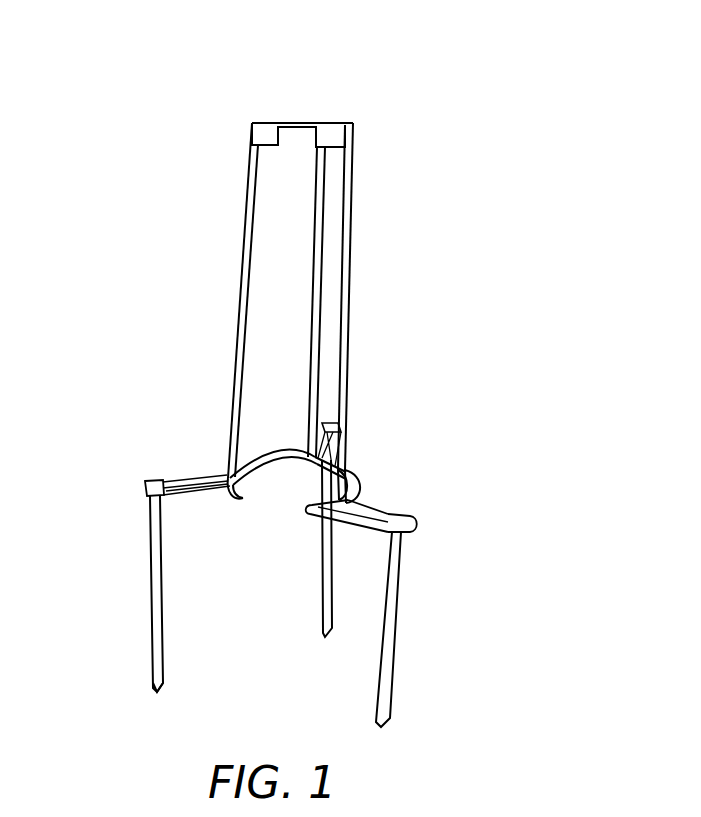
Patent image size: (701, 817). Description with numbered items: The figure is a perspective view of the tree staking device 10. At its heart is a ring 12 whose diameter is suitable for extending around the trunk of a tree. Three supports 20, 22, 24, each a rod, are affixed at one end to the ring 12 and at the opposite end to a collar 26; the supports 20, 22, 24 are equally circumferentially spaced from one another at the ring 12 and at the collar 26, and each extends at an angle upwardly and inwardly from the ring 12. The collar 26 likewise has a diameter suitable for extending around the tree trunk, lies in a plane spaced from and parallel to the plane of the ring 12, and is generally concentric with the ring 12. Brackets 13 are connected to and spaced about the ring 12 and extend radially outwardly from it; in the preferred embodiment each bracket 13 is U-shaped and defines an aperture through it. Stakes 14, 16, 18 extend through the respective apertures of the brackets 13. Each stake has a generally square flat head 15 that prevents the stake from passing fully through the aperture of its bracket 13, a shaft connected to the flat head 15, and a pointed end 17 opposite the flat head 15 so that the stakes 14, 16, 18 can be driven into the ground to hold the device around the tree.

The tree staking device 10 is at (490, 90).
The ring 12 is at (263, 440).
The bracket 13 is at (189, 462).
The stake 14 is at (153, 615).
The flat head 15 is at (142, 483).
The stake 16 is at (320, 605).
The pointed end 17 is at (148, 690).
The stake 18 is at (406, 590).
The support 20 is at (232, 254).
The support 22 is at (323, 233).
The support 24 is at (355, 292).
The collar 26 is at (280, 108).